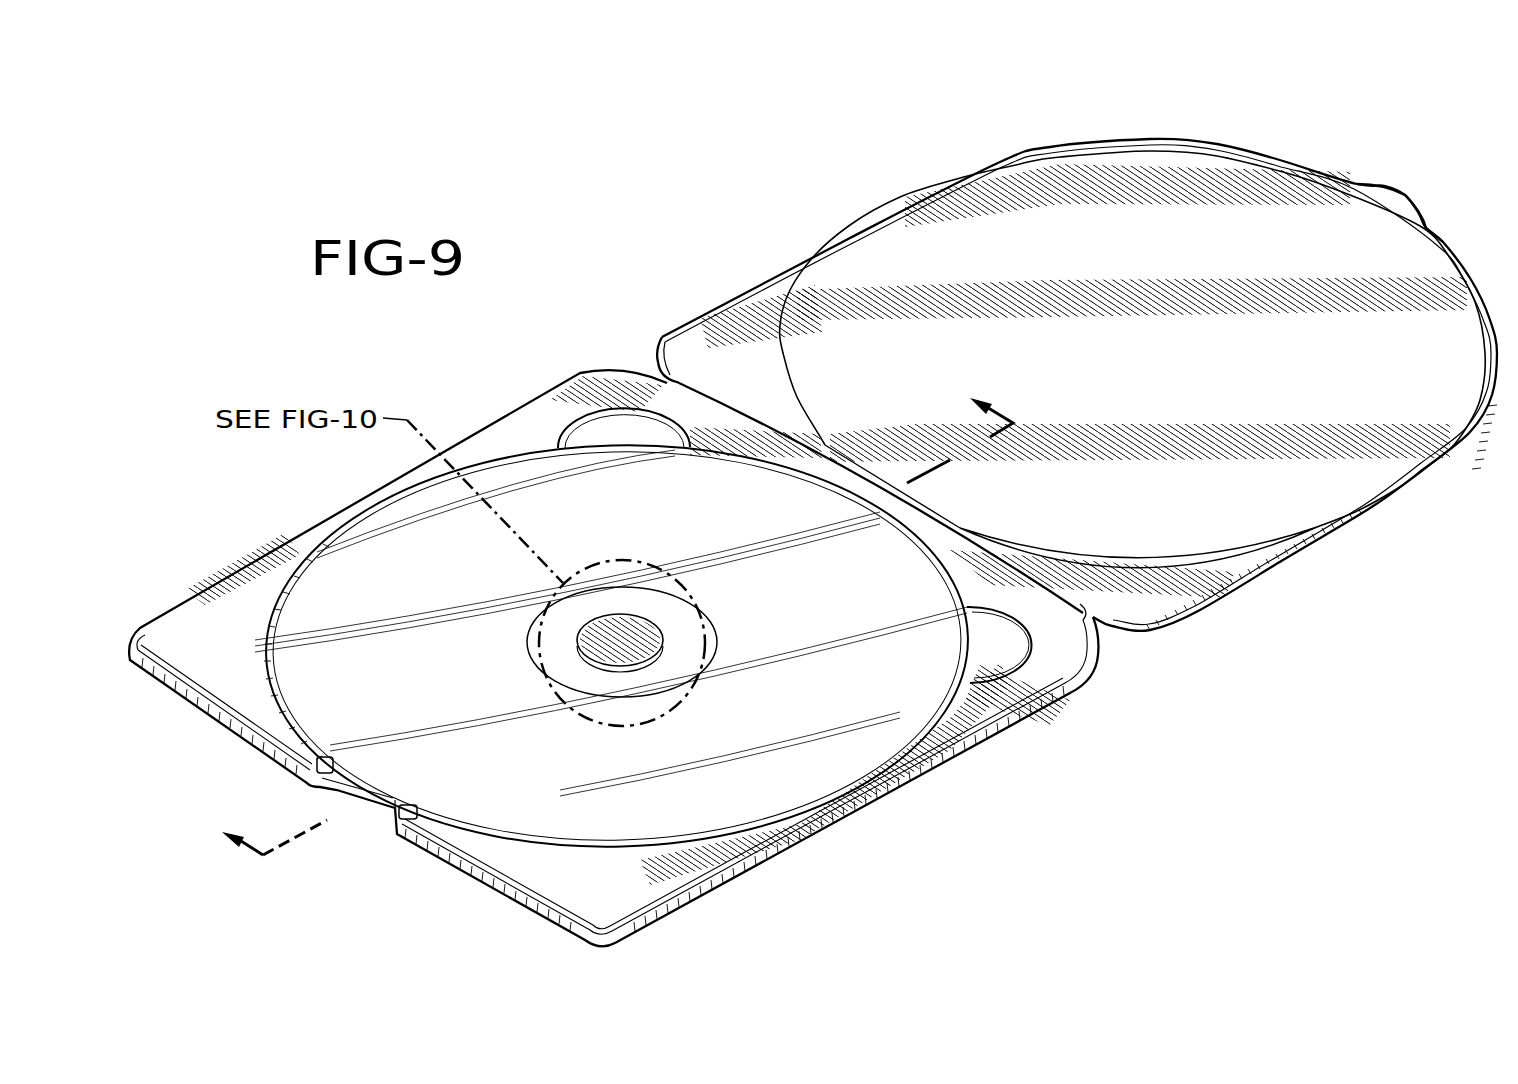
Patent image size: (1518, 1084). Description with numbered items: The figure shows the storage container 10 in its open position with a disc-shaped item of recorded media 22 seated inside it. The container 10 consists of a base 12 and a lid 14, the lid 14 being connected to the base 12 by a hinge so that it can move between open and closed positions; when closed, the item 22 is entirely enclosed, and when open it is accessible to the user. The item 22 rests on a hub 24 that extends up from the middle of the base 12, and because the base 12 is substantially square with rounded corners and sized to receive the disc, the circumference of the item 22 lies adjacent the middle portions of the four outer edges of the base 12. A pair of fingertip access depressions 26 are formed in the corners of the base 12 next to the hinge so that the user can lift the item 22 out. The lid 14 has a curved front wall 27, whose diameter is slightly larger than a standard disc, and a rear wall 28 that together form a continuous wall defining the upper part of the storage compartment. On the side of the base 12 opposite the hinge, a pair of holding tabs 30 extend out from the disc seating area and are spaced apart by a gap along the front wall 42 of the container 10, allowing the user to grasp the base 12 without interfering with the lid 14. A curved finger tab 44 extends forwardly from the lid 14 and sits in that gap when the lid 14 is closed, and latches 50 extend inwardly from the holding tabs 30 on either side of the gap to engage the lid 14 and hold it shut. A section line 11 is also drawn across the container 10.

The storage container 10 is at (1080, 762).
The section line 11- 11 is at (601, 616).
The base 12 is at (795, 860).
The lid 14 is at (1370, 528).
The disc-shaped item of recorded media 22 is at (397, 513).
The hub 24 is at (632, 605).
The fingertip access depressions 26 is at (594, 433).
The curved front wall 27 is at (1297, 157).
The rear wall 28 is at (1143, 547).
The holding tabs 30 is at (208, 612).
The front wall 42 is at (425, 862).
The finger tab 44 is at (1378, 190).
The latches 50 is at (330, 757).